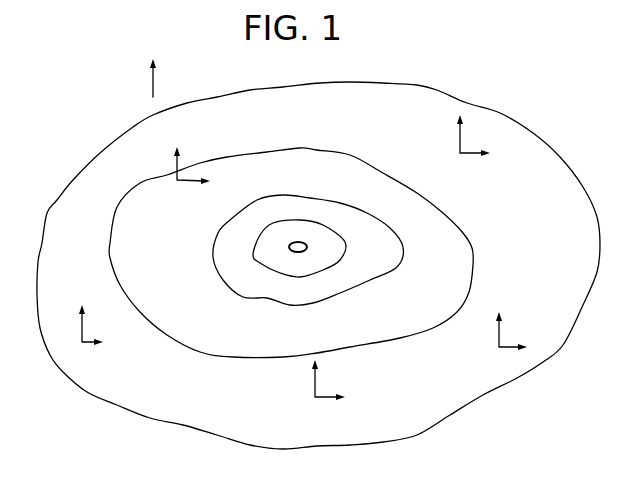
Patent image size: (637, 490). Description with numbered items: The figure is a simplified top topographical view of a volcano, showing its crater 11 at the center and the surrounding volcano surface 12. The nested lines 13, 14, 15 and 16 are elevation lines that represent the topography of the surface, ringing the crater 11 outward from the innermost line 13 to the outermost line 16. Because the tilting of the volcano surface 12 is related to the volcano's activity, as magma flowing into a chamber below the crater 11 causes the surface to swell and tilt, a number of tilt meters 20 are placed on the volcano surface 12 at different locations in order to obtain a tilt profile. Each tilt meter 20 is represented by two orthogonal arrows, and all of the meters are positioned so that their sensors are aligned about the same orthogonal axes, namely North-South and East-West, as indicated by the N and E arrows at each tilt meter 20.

The crater 11 is at (300, 242).
The volcano surface 12 is at (113, 380).
The elevation line 13 is at (323, 271).
The elevation line 14 is at (330, 298).
The elevation line 15 is at (380, 342).
The elevation line 16 is at (509, 385).
The tilt meter 20 is at (177, 180).